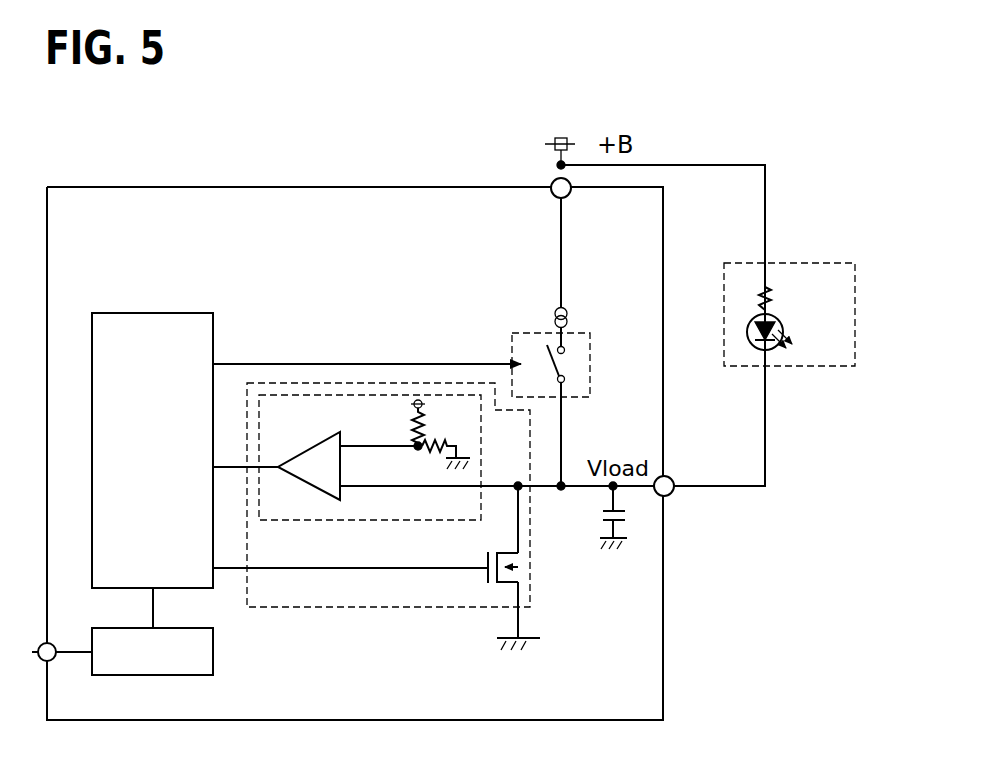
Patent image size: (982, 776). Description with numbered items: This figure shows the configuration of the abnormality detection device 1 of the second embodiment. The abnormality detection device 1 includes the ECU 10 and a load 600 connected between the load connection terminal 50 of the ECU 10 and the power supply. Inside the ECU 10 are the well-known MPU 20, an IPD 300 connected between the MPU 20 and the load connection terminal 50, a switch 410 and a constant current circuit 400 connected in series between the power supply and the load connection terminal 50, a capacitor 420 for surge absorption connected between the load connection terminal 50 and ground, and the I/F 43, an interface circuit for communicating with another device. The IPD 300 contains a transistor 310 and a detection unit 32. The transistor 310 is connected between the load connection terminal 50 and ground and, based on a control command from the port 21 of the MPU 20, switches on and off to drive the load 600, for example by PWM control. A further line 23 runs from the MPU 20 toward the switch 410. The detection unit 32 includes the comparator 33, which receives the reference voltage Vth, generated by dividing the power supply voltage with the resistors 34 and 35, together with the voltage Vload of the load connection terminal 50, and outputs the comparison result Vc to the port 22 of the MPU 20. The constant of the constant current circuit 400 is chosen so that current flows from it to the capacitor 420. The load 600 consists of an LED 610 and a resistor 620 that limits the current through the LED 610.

The abnormality detection device 1 is at (466, 137).
The ECU 10 is at (340, 187).
The MPU 20 is at (160, 312).
The port 21 is at (213, 568).
The port 22 is at (213, 467).
The switch control line 23 is at (213, 364).
The detection unit 32 is at (368, 525).
The comparator 33 is at (308, 448).
The resistor 34 is at (425, 422).
The resistor 35 is at (427, 454).
The I/F 43 is at (215, 648).
The load connection terminal 50 is at (675, 477).
The IPD 300 is at (390, 608).
The transistor 310 is at (488, 553).
The constant current circuit 400 is at (569, 318).
The switch 410 is at (590, 363).
The capacitor 420 is at (626, 514).
The load 600 is at (790, 286).
The LED 610 is at (785, 330).
The resistor 620 is at (770, 293).